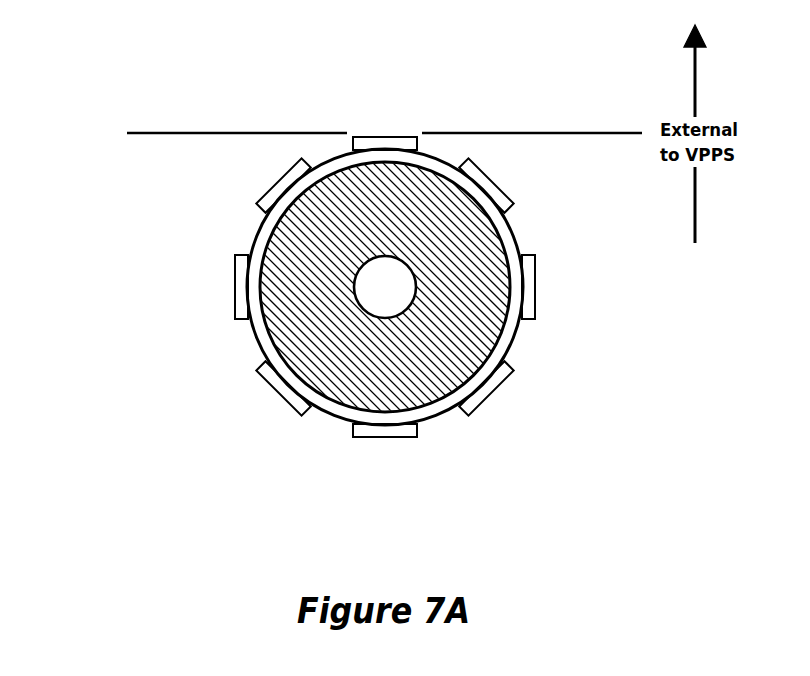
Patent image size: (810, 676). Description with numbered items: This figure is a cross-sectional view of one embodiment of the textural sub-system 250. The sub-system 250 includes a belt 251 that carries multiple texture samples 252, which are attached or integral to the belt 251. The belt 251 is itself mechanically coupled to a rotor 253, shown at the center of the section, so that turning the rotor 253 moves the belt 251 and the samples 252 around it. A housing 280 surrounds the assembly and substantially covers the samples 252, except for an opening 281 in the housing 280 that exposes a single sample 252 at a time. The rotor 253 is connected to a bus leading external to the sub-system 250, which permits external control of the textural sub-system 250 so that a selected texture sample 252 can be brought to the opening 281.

The textural sub-system 250 is at (387, 303).
The belt 251 is at (249, 337).
The texture samples 252 is at (535, 260).
The rotor 253 is at (313, 255).
The housing 280 is at (163, 133).
The opening 281 is at (380, 115).